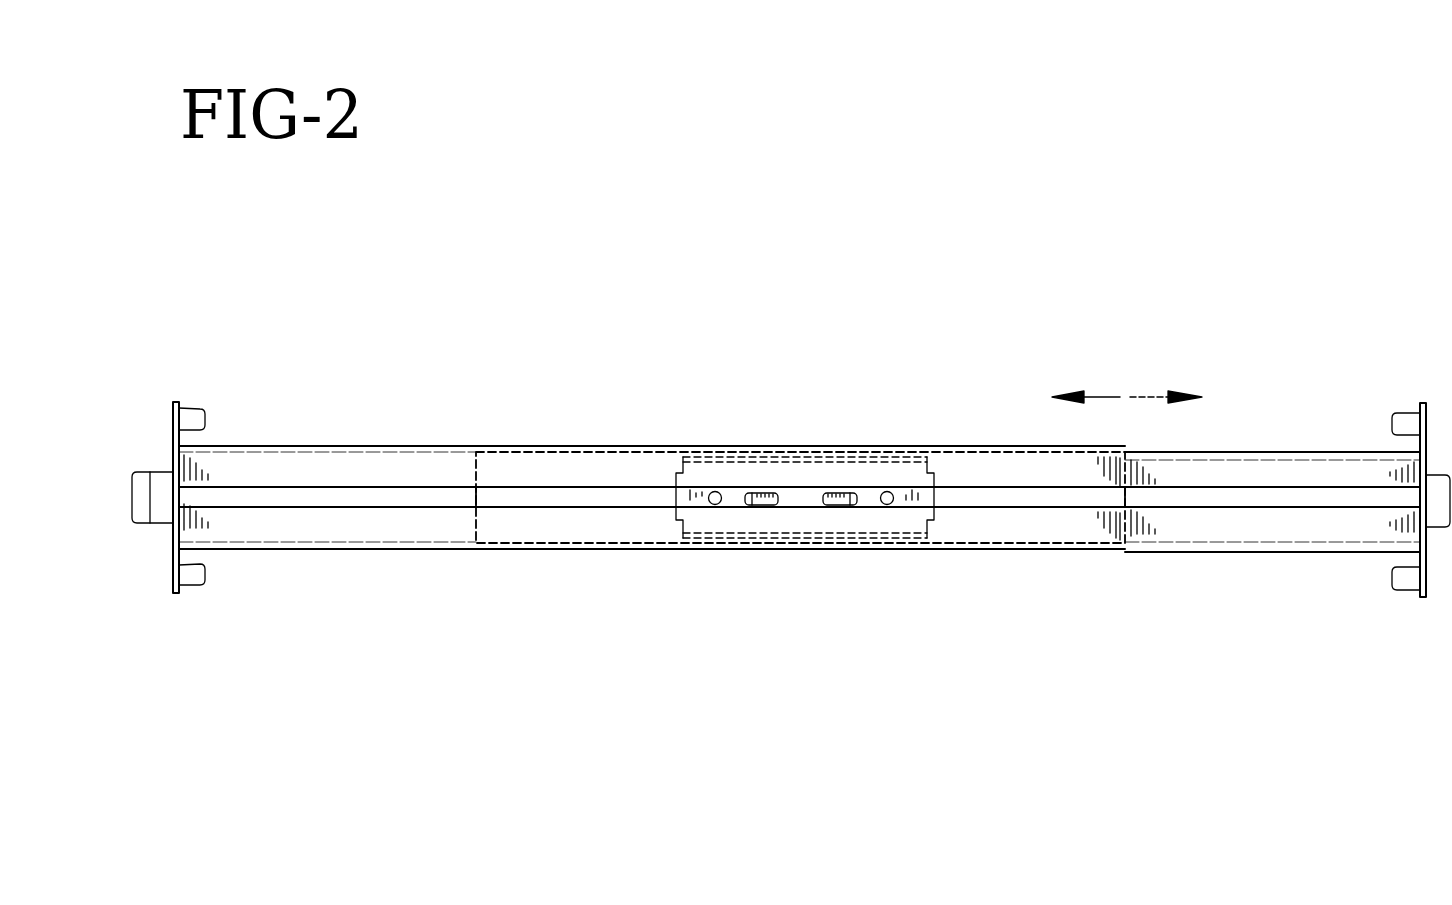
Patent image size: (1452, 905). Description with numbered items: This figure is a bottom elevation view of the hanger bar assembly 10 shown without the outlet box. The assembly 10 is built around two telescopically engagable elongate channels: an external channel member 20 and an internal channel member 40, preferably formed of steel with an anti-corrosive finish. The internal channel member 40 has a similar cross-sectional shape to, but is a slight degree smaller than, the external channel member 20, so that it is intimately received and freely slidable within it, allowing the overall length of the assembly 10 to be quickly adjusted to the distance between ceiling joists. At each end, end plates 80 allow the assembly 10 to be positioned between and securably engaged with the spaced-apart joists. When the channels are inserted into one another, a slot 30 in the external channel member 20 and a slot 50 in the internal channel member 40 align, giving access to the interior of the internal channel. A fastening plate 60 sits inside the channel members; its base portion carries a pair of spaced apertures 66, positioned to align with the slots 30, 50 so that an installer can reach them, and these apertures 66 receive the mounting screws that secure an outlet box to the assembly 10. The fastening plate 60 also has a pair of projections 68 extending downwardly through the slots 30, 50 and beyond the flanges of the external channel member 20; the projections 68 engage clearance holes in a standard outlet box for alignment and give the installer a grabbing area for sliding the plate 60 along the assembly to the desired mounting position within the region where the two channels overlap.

The hanger bar assembly 10 is at (482, 260).
The external channel member 20 is at (360, 467).
The slot 30 is at (420, 498).
The internal channel member 40 is at (1343, 470).
The slot 50 is at (1203, 502).
The fastening plate 60 is at (673, 497).
The apertures 66 is at (708, 503).
The projections 68 is at (752, 506).
The end plates 80 is at (173, 428).